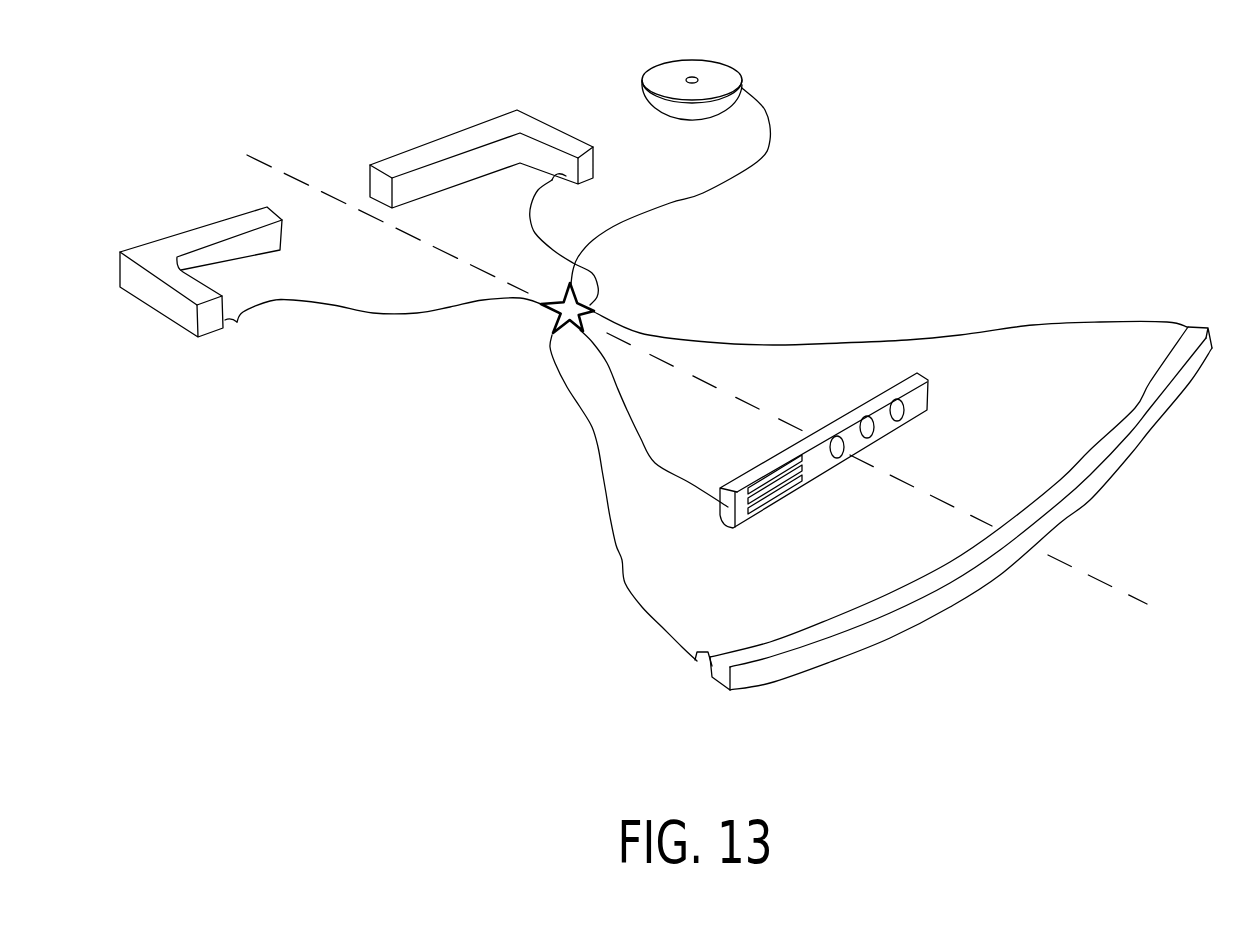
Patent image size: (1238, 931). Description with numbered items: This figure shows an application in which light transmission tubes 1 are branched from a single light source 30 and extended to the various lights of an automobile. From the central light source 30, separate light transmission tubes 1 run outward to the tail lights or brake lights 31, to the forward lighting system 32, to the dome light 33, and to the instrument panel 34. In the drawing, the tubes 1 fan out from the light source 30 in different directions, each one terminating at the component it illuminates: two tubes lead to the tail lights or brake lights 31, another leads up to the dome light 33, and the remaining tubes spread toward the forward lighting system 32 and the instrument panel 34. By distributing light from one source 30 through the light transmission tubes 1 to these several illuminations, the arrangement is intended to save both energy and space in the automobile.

The light transmission tube 1 is at (353, 307).
The light source 30 is at (530, 326).
The tail lights or brake lights 31 is at (257, 203).
The forward lighting system 32 is at (935, 625).
The dome light 33 is at (722, 54).
The instrument panel 34 is at (886, 378).